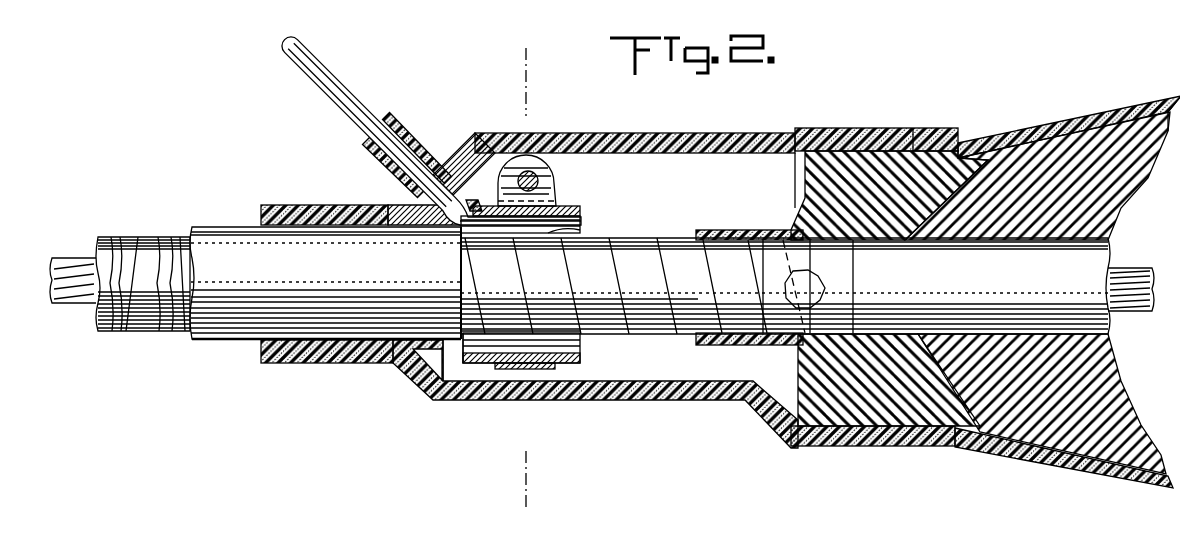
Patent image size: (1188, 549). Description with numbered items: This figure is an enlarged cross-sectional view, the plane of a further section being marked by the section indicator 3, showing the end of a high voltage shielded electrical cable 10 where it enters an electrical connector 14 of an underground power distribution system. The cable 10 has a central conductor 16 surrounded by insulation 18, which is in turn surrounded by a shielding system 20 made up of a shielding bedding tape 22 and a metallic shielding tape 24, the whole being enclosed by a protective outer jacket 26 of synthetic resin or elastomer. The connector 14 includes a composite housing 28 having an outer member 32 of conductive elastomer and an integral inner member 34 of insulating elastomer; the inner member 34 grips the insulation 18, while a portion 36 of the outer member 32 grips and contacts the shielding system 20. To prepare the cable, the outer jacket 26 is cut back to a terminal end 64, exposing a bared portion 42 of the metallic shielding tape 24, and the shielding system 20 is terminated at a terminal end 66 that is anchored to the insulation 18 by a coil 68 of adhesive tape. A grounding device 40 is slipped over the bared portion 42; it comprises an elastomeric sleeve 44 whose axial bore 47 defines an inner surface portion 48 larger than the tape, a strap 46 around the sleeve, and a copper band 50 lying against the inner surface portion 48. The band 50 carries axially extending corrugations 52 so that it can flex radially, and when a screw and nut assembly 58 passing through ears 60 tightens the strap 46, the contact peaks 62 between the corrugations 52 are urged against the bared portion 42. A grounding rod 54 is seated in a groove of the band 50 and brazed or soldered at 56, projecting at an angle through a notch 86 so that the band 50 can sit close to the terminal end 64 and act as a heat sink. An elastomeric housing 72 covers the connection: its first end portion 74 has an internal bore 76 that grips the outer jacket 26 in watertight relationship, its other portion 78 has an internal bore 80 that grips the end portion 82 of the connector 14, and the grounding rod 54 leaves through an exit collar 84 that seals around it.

The section line 3- 3 is at (512, 465).
The high voltage shielded electrical cable 10 is at (192, 338).
The electrical connector 14 is at (1005, 128).
The central conductor 16 is at (1128, 300).
The insulation 18 is at (95, 238).
The shielding system 20 is at (668, 230).
The shielding bedding tape 22 is at (118, 236).
The metallic shielding tape 24 is at (655, 305).
The protective outer jacket 26 is at (215, 232).
The composite housing 28 is at (1050, 452).
The outer member 32 is at (1060, 115).
The inner member 34 is at (1115, 100).
The portion 36 is at (720, 222).
The grounding device 40 is at (540, 122).
The bared portion 42 is at (615, 240).
The sleeve 44 is at (573, 202).
The strap 46 is at (535, 361).
The axial bore 47 is at (575, 340).
The inner surface portion 48 is at (503, 355).
The band 50 is at (470, 328).
The corrugations 52 is at (457, 355).
The grounding rod 54 is at (437, 200).
The brazed or soldered joint 56 is at (498, 210).
The screw and nut assembly 58 is at (530, 172).
The ears 60 is at (542, 182).
The contact peaks 62 is at (510, 322).
The terminal end of outer jacket 64 is at (448, 264).
The terminal end of shielding system 66 is at (815, 276).
The coil of adhesive tape 68 is at (848, 258).
The housing 72 is at (660, 124).
The first end portion 74 is at (295, 198).
The internal bore 76 is at (318, 218).
The portion 78 is at (830, 439).
The internal bore 80 is at (880, 128).
The end portion 82 is at (915, 125).
The exit aperture or collar 84 is at (398, 115).
The notch 86 is at (471, 186).